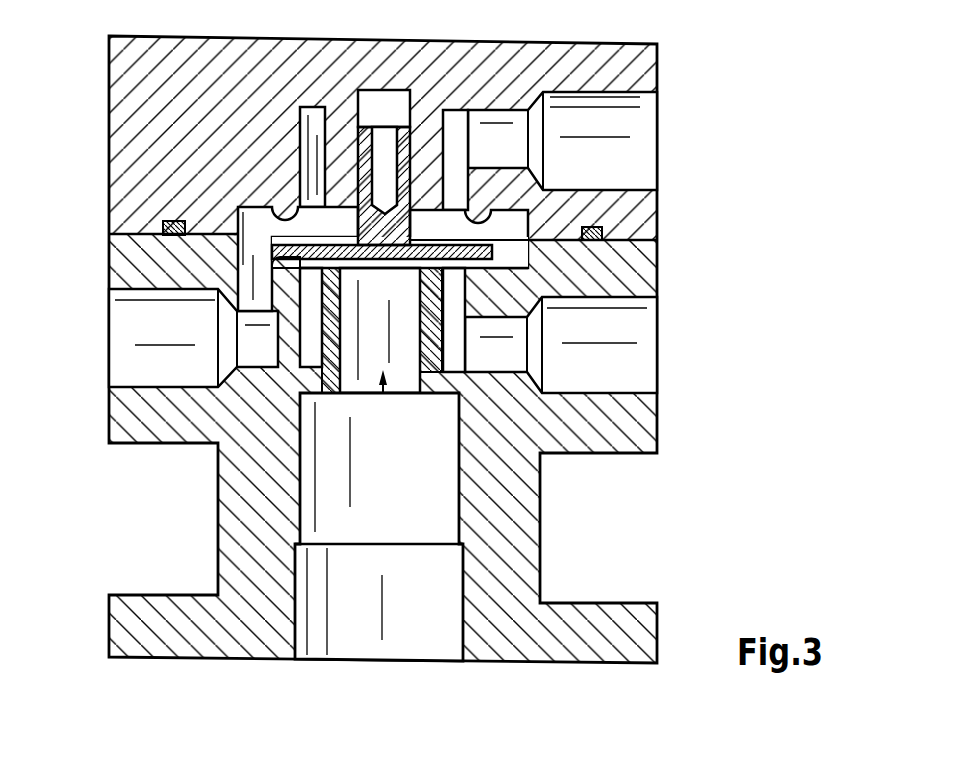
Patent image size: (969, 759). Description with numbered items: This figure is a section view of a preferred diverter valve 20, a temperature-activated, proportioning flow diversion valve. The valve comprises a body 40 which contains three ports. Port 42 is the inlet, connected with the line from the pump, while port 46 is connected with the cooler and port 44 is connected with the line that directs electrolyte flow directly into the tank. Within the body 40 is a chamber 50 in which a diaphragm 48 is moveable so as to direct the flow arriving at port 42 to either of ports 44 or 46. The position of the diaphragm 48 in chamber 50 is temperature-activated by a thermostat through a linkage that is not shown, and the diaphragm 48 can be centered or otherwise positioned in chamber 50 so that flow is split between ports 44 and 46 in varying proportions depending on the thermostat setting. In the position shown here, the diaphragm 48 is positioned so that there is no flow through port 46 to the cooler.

The diverter valve 20 is at (698, 74).
The body 40 is at (153, 165).
The port 42 is at (157, 386).
The port 44 is at (613, 192).
The port 46 is at (598, 393).
The diaphragm 48 is at (490, 251).
The chamber 50 is at (428, 210).